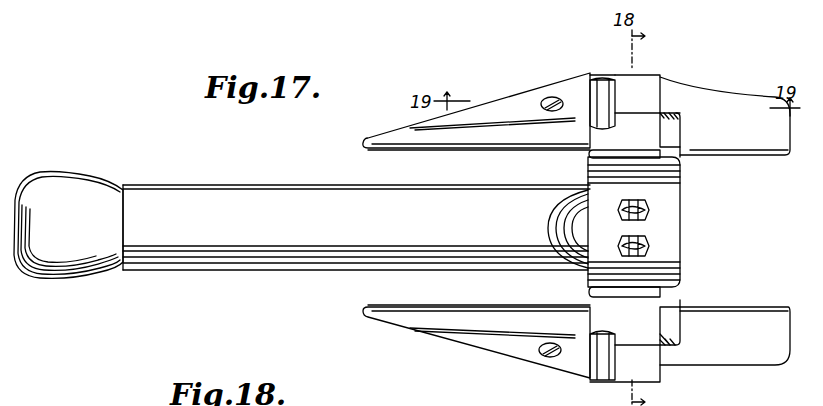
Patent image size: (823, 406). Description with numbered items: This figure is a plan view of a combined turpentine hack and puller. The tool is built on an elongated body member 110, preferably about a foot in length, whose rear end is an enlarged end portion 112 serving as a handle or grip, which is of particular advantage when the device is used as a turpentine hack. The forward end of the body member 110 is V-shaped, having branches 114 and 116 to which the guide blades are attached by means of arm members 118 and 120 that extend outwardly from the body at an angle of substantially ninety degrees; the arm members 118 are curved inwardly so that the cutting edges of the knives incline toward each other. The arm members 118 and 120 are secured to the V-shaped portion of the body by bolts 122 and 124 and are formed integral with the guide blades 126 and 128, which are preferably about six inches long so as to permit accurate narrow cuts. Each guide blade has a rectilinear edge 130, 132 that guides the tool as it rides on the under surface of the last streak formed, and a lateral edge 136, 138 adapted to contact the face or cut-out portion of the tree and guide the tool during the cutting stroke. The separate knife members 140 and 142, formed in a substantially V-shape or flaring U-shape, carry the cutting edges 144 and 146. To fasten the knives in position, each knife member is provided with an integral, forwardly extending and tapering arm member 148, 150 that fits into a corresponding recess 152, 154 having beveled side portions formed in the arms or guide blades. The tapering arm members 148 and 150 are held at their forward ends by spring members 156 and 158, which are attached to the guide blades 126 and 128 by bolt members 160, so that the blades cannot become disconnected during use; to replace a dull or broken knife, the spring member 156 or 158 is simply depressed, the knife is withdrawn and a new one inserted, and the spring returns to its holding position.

The body member 110 is at (172, 184).
The enlarged end portion 112 is at (60, 168).
The branch 114 is at (680, 186).
The branch 116 is at (680, 274).
The arm member 118 is at (589, 163).
The arm member 120 is at (589, 296).
The bolt 122 is at (650, 210).
The bolt 124 is at (647, 250).
The guide blade 126 is at (460, 139).
The guide blade 128 is at (492, 346).
The rectilinear edge 130 is at (405, 146).
The rectilinear edge 132 is at (420, 302).
The lateral edge 136 is at (498, 123).
The lateral edge 138 is at (512, 331).
The knife member 140 is at (741, 104).
The knife member 142 is at (743, 350).
The cutting edge 144 is at (680, 134).
The cutting edge 146 is at (678, 328).
The forwardly extending arm member 148 is at (636, 96).
The forwardly extending arm member 150 is at (658, 376).
The recess 152 is at (641, 115).
The recess 154 is at (637, 343).
The spring member 156 is at (601, 80).
The spring member 158 is at (598, 372).
The bolt member 160 is at (551, 97).